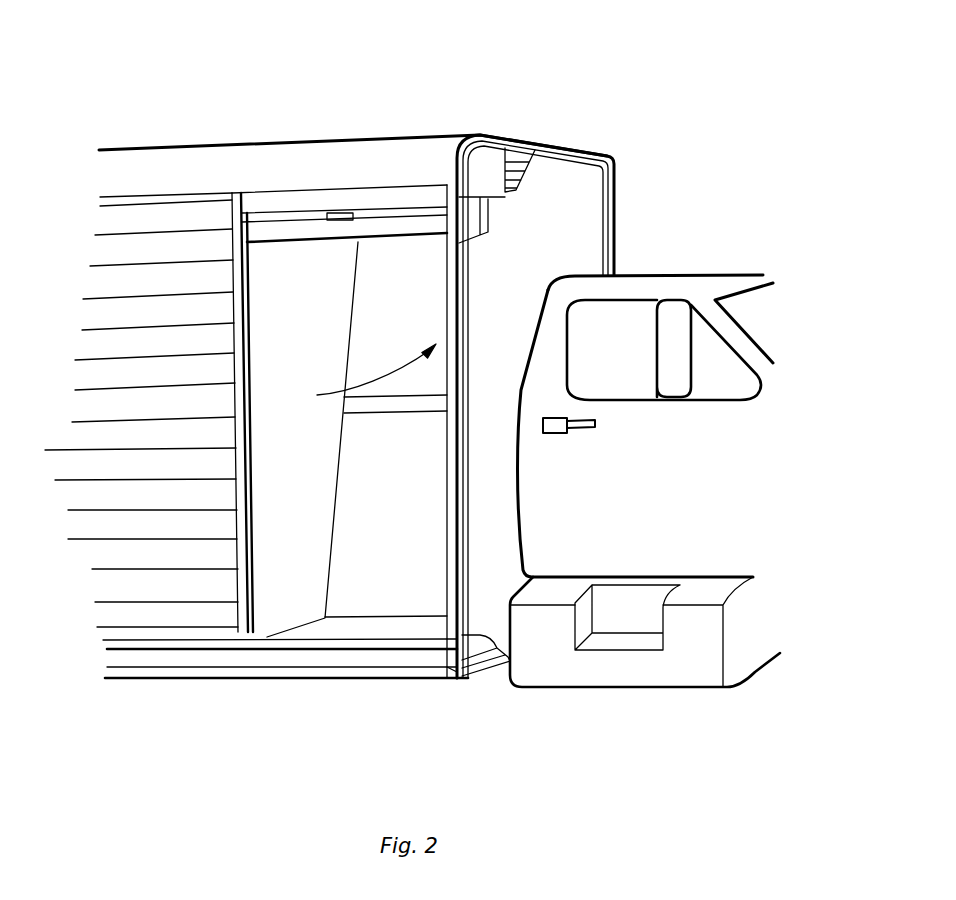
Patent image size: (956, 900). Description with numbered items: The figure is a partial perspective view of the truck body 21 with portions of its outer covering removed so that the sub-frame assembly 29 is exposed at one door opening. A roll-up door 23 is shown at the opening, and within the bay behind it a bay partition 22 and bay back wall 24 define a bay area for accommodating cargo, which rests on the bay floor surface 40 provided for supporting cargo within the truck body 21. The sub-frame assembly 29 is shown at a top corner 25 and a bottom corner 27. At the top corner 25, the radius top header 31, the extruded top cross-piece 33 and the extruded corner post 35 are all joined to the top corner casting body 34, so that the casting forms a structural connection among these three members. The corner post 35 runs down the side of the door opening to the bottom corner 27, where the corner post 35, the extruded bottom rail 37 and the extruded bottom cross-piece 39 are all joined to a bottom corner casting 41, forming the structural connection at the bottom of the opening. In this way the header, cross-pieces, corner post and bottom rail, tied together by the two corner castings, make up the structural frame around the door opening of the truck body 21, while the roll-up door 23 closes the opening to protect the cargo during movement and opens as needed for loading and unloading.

The truck body 21 is at (335, 105).
The bay partition 22 is at (272, 435).
The roll-up door 23 is at (285, 220).
The bay back wall 24 is at (392, 517).
The top corner 25 is at (505, 110).
The bottom corner 27 is at (468, 700).
The sub-frame assembly 29 is at (361, 376).
The radius top header 31 is at (433, 163).
The extruded top cross-piece 33 is at (527, 143).
The top corner casting body 34 is at (475, 162).
The extruded corner post 35 is at (450, 278).
The extruded bottom rail 37 is at (405, 658).
The extruded bottom cross-piece 39 is at (508, 657).
The bay floor surface 40 is at (373, 627).
The bottom corner casting 41 is at (434, 681).